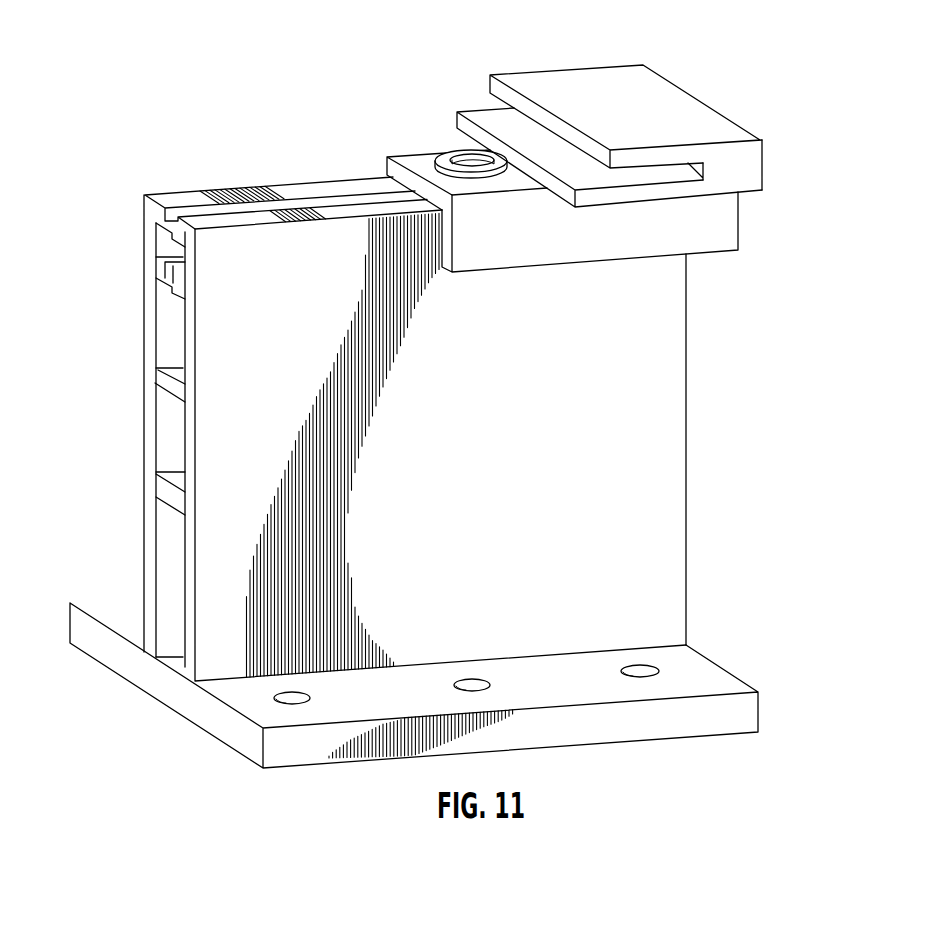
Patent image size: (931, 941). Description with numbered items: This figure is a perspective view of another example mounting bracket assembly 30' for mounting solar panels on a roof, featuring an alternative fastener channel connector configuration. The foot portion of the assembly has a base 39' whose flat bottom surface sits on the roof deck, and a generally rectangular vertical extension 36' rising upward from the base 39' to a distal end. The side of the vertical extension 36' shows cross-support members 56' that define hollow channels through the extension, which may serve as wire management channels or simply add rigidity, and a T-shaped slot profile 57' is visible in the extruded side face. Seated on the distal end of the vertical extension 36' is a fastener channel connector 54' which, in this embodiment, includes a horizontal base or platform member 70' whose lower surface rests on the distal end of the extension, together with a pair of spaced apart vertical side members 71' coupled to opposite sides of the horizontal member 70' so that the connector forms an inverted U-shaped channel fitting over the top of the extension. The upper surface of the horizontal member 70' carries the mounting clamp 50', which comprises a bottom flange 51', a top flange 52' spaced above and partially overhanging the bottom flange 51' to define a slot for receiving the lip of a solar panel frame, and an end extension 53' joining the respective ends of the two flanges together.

The assembly 30' is at (449, 396).
The vertical extension 36' is at (495, 445).
The base 39' is at (456, 685).
The mounting clamp 50' is at (628, 115).
The bottom flange 51' is at (589, 122).
The top flange 52' is at (626, 96).
The end extension 53' is at (764, 158).
The fastener channel connector 54' is at (727, 449).
The cross-support members 56' is at (247, 422).
The T-shaped connector 57' is at (131, 437).
The horizontal member 70' is at (443, 145).
The vertical side members 71' is at (626, 232).